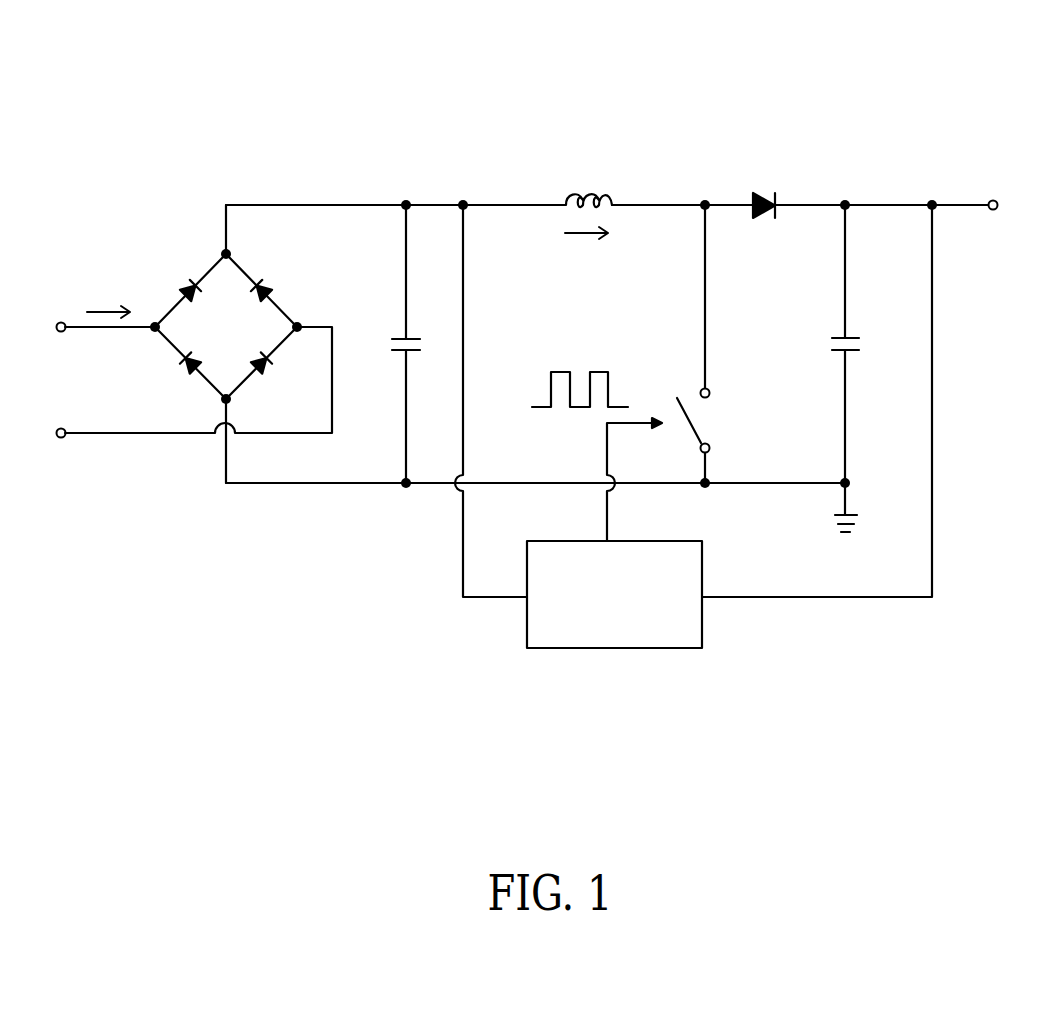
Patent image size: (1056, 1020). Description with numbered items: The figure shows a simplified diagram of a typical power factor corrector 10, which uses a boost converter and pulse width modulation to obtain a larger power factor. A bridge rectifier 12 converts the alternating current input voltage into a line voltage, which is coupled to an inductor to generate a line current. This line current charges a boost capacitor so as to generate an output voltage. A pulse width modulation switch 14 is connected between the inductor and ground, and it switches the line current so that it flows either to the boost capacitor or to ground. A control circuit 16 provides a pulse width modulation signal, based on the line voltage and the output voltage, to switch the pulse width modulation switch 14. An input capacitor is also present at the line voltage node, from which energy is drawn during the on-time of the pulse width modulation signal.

The power factor corrector 10 is at (922, 98).
The bridge rectifier 12 is at (175, 248).
The PWM switch 14 is at (722, 423).
The control circuit 16 is at (613, 648).